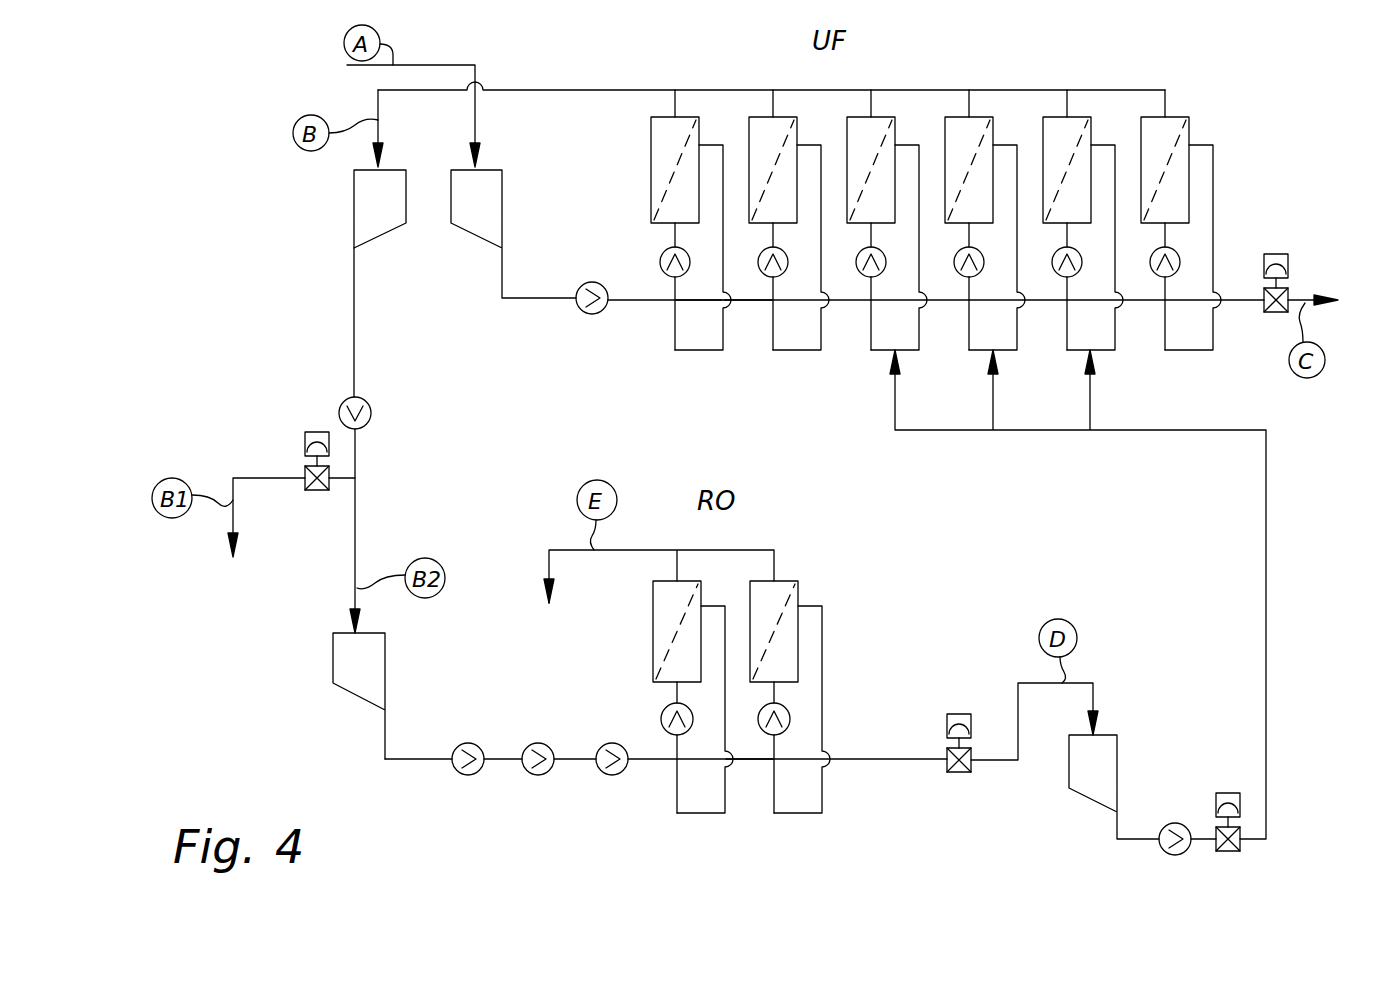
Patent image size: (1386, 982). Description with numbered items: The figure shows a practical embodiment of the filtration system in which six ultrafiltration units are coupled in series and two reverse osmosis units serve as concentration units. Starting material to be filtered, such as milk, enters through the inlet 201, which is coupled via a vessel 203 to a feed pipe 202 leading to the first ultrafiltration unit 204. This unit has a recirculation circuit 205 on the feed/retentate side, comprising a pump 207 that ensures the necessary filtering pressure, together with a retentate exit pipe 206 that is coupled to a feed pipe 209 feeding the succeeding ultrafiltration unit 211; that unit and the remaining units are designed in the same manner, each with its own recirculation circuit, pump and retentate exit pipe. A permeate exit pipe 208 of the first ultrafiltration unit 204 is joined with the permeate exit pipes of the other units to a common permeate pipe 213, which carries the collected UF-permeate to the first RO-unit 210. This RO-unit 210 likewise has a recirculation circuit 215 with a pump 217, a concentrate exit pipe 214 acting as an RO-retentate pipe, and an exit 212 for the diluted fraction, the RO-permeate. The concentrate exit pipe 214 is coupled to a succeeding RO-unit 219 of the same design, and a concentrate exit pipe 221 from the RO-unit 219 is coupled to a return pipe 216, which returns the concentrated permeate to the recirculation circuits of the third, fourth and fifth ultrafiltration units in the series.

The inlet 201 is at (452, 65).
The feed pipe 202 is at (614, 298).
The vessel 203 is at (502, 215).
The first ultrafiltration unit 204 is at (649, 163).
The recirculation circuit 205 is at (695, 352).
The retentate exit pipe 206 is at (697, 302).
The pump 207 is at (660, 252).
The permeate exit pipe 208 is at (673, 100).
The feed pipe 209 is at (758, 302).
The first RO-unit 210 is at (652, 620).
The succeeding ultrafiltration unit 211 is at (750, 130).
The exit for diluted fraction 212 is at (677, 565).
The common permeate pipe 213 is at (566, 90).
The concentrate exit pipe 214 is at (752, 762).
The recirculation circuit 215 is at (707, 815).
The return pipe 216 is at (1266, 635).
The pump 217 is at (660, 712).
The succeeding RO-unit 219 is at (798, 590).
The concentrate exit pipe 221 is at (903, 762).